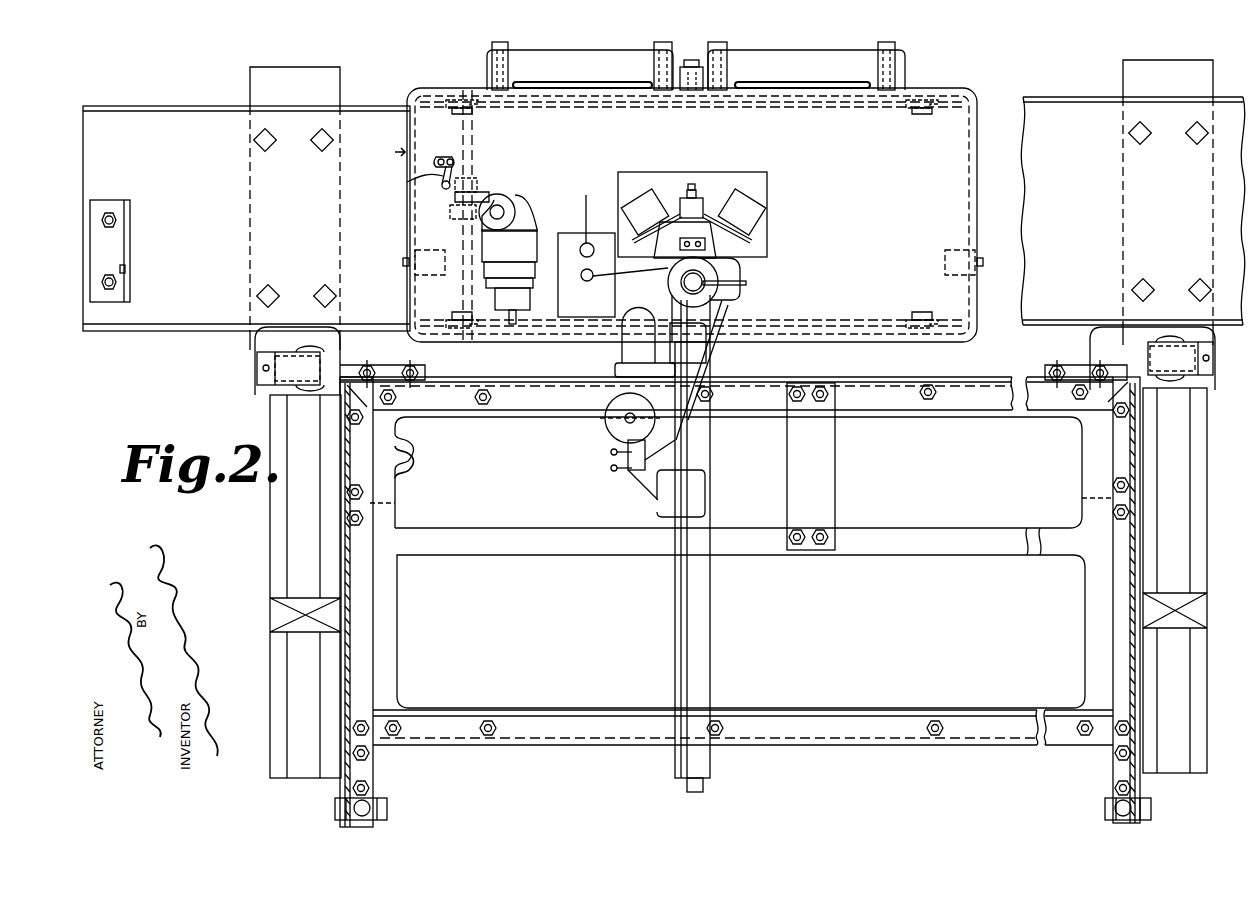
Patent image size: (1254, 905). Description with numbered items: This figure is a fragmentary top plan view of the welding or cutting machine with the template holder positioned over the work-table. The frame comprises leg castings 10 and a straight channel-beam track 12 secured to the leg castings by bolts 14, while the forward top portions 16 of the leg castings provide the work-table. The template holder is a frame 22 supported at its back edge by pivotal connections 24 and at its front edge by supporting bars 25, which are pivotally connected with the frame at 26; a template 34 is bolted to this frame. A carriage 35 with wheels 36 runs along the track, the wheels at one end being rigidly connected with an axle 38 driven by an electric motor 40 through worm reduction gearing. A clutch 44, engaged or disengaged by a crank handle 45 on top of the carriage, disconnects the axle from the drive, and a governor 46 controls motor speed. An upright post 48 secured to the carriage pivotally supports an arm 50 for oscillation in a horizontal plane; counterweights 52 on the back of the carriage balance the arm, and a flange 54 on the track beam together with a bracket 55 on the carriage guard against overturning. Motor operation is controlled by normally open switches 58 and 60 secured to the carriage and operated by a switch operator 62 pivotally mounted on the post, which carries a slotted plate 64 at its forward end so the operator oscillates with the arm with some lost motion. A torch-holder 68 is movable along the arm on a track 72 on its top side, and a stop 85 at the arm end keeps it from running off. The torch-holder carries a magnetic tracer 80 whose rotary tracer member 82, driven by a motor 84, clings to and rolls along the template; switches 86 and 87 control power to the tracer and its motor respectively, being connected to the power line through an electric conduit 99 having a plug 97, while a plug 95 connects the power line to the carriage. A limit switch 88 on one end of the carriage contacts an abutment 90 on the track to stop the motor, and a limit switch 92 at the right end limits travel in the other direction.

The leg castings 10 is at (331, 74).
The track 12 is at (190, 111).
The bolts 14 is at (315, 148).
The forward top portions of the leg castings 16 is at (1210, 462).
The frame 22 is at (1111, 436).
The pivotal connections 24 is at (273, 366).
The supporting bars 25 is at (368, 802).
The pivotal connection of supporting bars 26 is at (335, 809).
The template 34 is at (410, 478).
The carriage 35 is at (383, 153).
The wheels 36 is at (482, 108).
The axle 38 is at (470, 144).
The electric motor 40 is at (523, 248).
The clutch 44 is at (478, 206).
The crank handle 45 is at (437, 178).
The governor 46 is at (512, 306).
The upright post 48 is at (681, 285).
The arm 50 is at (717, 626).
The counterweights 52 is at (696, 66).
The flange 54 is at (378, 102).
The bracket 55 is at (689, 67).
The switch 58 is at (692, 214).
The switch 60 is at (723, 213).
The switch operator 62 is at (710, 238).
The plate 64 is at (725, 286).
The torch-holder 68 is at (656, 510).
The track 72 is at (681, 622).
The magnetic tracer 80 is at (608, 421).
The rotary tracer member 82 is at (624, 442).
The motor 84 is at (620, 366).
The stop 85 is at (705, 783).
The switch 86 is at (612, 470).
The switch 87 is at (612, 454).
The limit switch 88 is at (404, 266).
The abutment 90 is at (124, 269).
The limit switch 92 is at (980, 260).
The plug 95 is at (590, 246).
The plug 97 is at (585, 280).
The electric conduit 99 is at (720, 342).